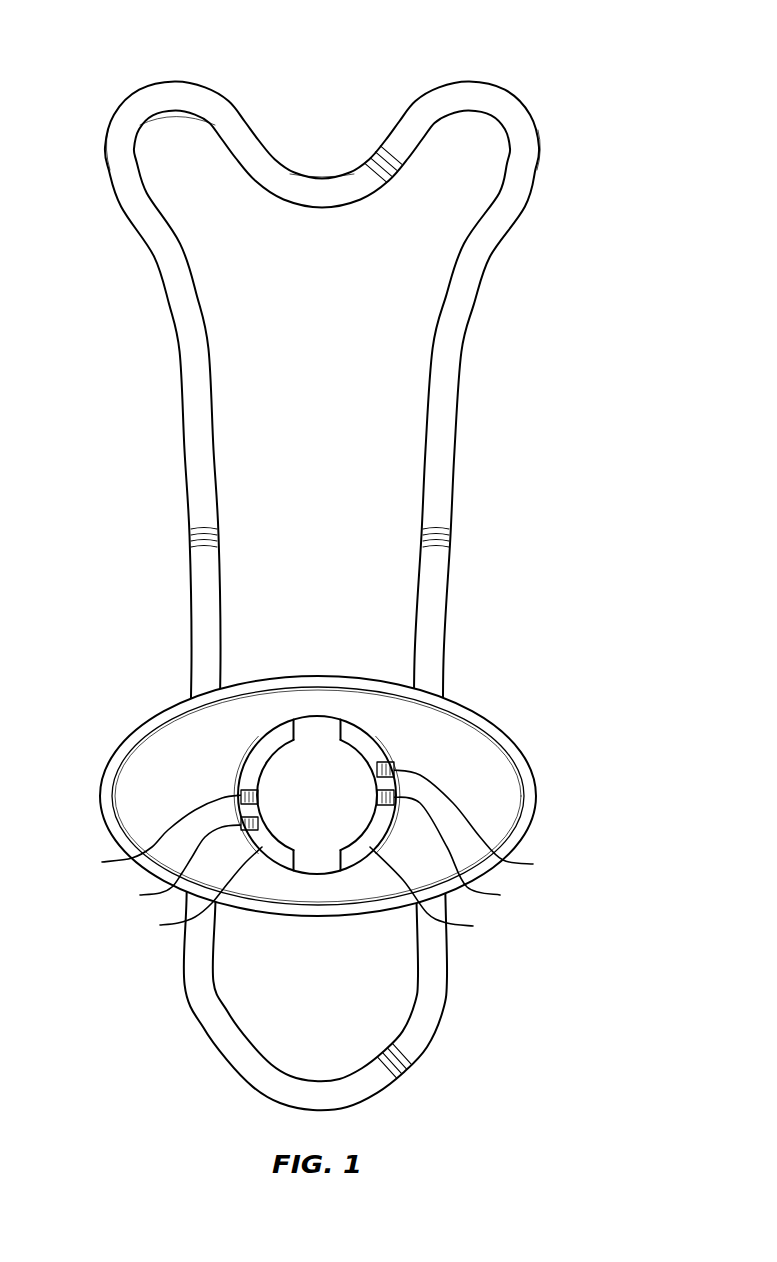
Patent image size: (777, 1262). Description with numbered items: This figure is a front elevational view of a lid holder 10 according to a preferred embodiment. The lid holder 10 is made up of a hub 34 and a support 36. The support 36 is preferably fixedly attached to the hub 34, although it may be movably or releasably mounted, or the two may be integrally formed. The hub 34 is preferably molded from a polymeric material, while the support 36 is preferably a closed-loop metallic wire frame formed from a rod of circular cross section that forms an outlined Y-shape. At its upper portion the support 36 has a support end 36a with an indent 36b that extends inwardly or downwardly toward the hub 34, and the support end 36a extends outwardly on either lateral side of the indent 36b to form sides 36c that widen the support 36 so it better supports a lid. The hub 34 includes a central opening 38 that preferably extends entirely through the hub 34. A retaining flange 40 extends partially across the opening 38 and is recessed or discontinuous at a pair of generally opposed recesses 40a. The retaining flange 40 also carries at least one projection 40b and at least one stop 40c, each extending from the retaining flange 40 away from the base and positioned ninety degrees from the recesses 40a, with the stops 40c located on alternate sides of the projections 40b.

The lid holder 10 is at (507, 42).
The hub 34 is at (150, 758).
The support 36 is at (324, 570).
The support end 36a is at (172, 82).
The indent 36b is at (320, 178).
The sides 36c is at (105, 145).
The central opening 38 is at (277, 770).
The retaining flange 40 is at (315, 852).
The recesses 40a is at (314, 728).
The projection 40b is at (103, 862).
The stop 40c is at (540, 865).